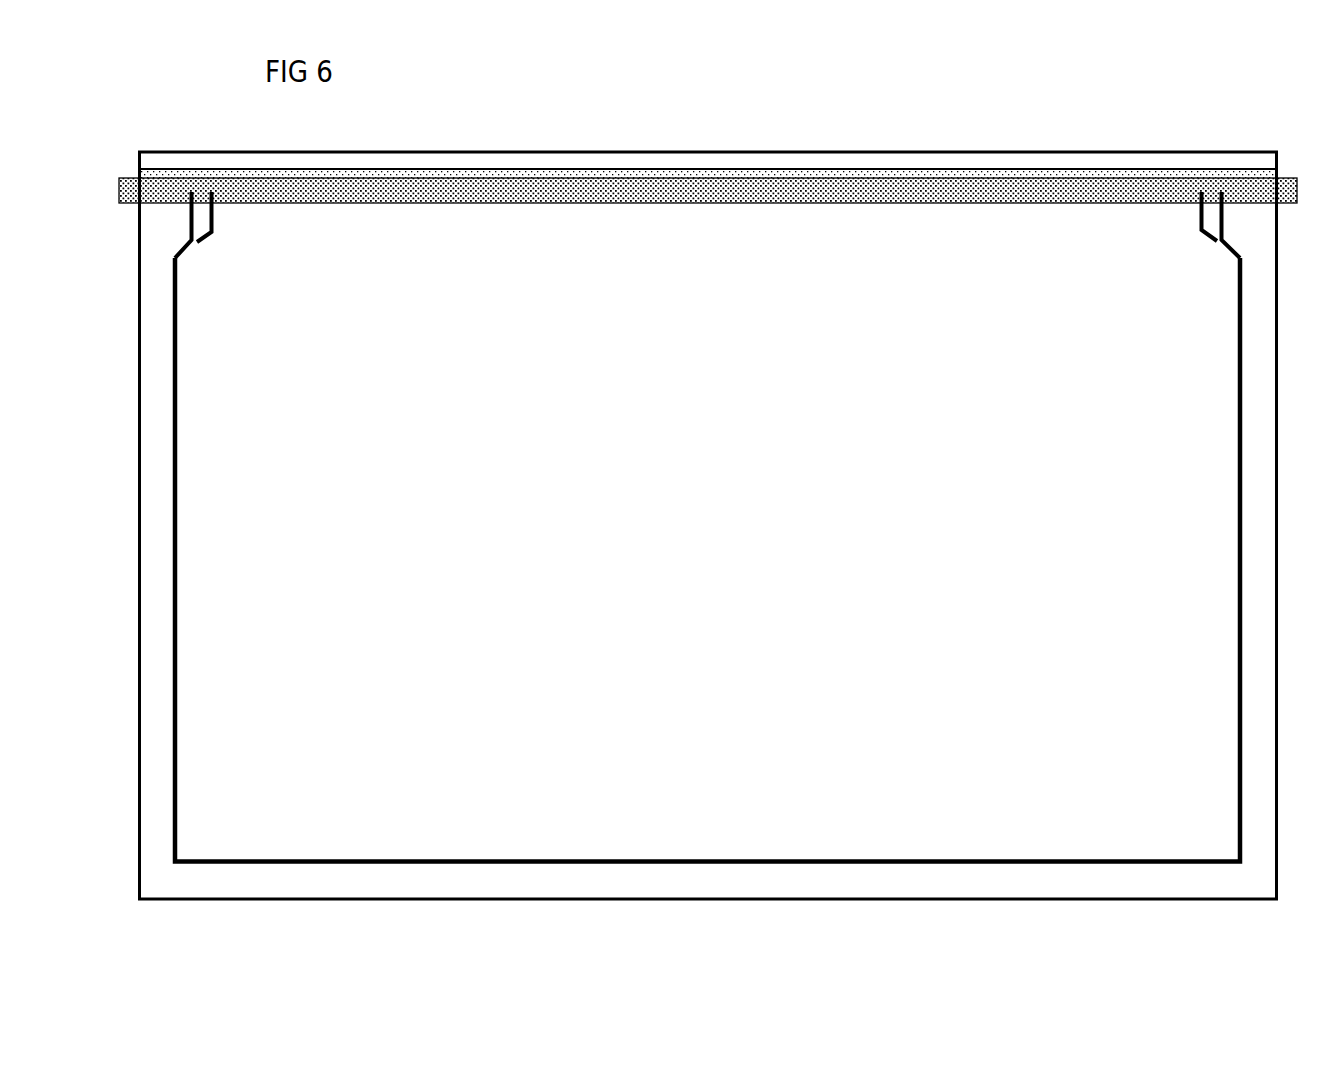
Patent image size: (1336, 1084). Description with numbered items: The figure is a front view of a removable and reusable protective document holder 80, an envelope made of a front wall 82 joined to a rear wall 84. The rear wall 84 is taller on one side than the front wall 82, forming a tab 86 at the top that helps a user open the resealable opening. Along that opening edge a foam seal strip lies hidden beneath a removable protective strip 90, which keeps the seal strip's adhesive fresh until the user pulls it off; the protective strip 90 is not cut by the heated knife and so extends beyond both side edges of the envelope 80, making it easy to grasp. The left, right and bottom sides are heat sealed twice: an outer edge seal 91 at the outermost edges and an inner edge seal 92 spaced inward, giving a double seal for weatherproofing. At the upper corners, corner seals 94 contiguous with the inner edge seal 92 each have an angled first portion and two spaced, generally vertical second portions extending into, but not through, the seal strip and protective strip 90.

The protective document holder 80 is at (1060, 90).
The front wall 82 is at (212, 668).
The rear wall 84 is at (1242, 157).
The tab 86 is at (135, 170).
The protective strip 90 is at (687, 192).
The outer edge seal 91 is at (1279, 437).
The inner edge seal 92 is at (177, 447).
The corner seal 94 is at (197, 243).